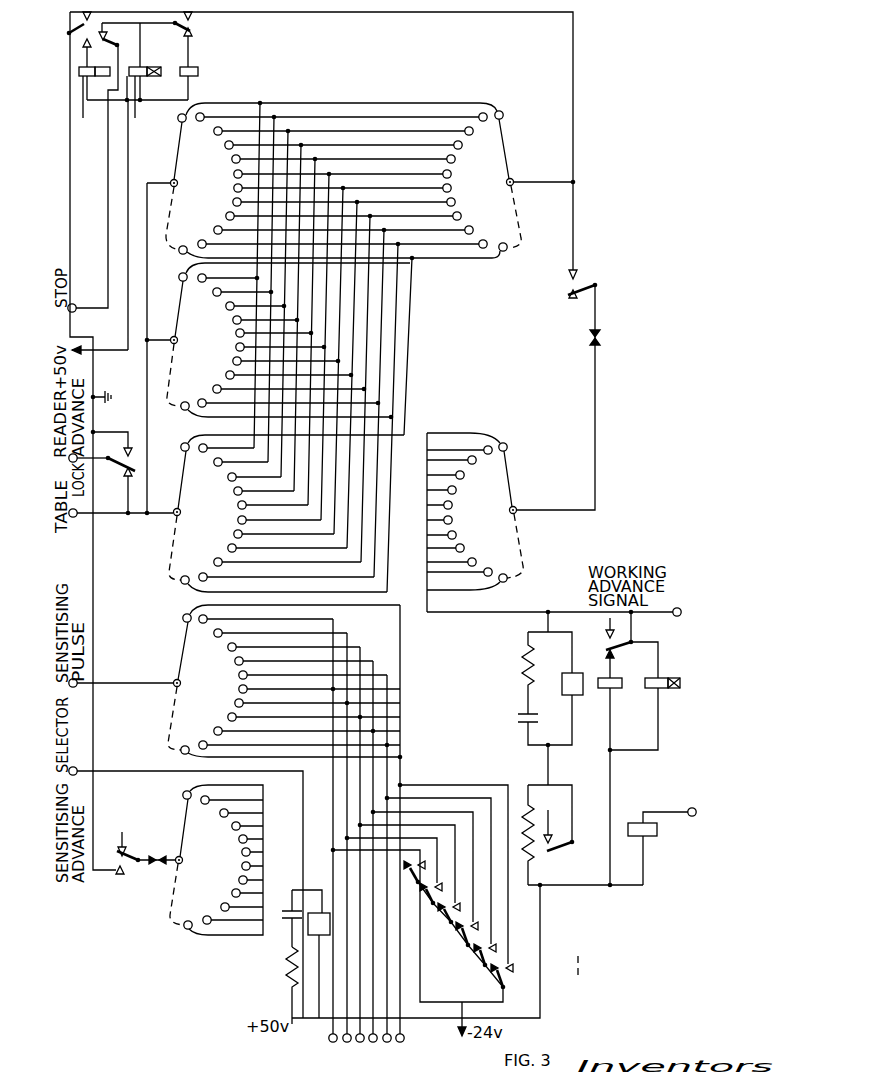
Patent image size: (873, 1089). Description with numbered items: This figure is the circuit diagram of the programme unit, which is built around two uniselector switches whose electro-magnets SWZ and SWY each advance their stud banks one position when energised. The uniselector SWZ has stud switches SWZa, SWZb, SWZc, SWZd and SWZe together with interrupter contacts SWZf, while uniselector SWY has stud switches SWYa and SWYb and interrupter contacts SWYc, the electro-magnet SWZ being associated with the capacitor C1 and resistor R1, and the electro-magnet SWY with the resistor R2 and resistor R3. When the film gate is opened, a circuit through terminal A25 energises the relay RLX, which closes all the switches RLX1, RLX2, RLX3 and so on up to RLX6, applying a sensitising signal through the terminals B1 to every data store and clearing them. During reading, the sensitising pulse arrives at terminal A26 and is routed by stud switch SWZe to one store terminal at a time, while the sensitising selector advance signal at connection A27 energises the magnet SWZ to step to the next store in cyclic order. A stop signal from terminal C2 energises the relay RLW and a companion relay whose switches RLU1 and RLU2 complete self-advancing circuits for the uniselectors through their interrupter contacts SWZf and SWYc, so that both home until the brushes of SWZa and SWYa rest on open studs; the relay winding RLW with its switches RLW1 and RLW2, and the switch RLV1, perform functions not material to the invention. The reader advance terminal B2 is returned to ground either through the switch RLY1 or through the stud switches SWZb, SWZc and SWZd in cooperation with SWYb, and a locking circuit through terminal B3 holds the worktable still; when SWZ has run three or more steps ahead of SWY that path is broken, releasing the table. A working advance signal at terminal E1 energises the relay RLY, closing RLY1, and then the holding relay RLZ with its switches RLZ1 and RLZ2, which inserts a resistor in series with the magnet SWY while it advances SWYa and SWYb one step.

The relay switch RLW1 is at (200, 25).
The relay switch RLW2 is at (69, 33).
The relay switch RLV1 is at (117, 45).
The relay winding RLW is at (163, 141).
The relay switch RLU2 is at (217, 71).
The interrupter contacts SWYc is at (582, 397).
The terminal C2 is at (75, 303).
The relay switch RLY1 is at (113, 462).
The reader advance terminal B2 is at (77, 461).
The locking terminal B3 is at (77, 516).
The stud switch SWZb is at (333, 180).
The stud switch SWYb is at (509, 181).
The stud switch SWZc is at (288, 340).
The stud switch SWZd is at (286, 513).
The stud switch SWYa is at (475, 522).
The working advance signal terminal E1 is at (559, 603).
The resistor R2 is at (535, 678).
The uniselector electro-magnet SWY is at (562, 684).
The resistor R3 is at (541, 815).
The relay switch RLZ2 is at (570, 840).
The relay switch RLZ1 is at (652, 635).
The relay winding RLY is at (646, 709).
The holding relay winding RLZ is at (698, 709).
The terminal A25 is at (677, 805).
The relay winding RLX is at (687, 854).
The sensitising pulse terminal A26 is at (77, 680).
The stud switch SWZe is at (284, 681).
The sensitising selector advance connection A27 is at (77, 768).
The relay switch RLU1 is at (144, 848).
The interrupter contacts SWZf is at (144, 878).
The stud switch SWZa is at (216, 860).
The capacitor C1 is at (297, 907).
The uniselector electro-magnet SWZ is at (318, 936).
The resistor R1 is at (285, 956).
The relay switch RLX1 is at (424, 866).
The relay switch RLX2 is at (441, 888).
The relay switch RLX3 is at (459, 908).
The relay switch RLX6 is at (512, 971).
The sensitising signal input terminals B1 is at (329, 1043).